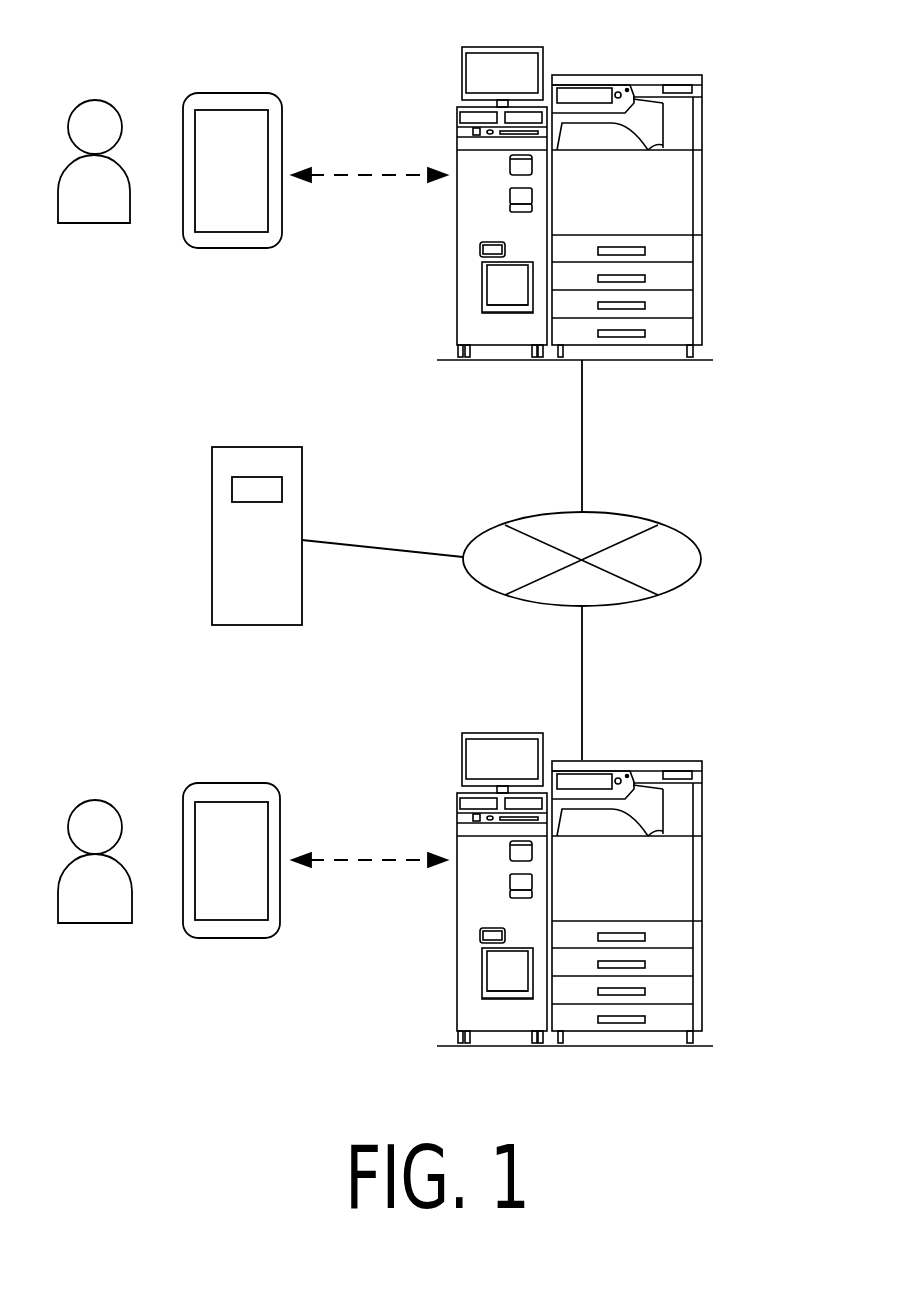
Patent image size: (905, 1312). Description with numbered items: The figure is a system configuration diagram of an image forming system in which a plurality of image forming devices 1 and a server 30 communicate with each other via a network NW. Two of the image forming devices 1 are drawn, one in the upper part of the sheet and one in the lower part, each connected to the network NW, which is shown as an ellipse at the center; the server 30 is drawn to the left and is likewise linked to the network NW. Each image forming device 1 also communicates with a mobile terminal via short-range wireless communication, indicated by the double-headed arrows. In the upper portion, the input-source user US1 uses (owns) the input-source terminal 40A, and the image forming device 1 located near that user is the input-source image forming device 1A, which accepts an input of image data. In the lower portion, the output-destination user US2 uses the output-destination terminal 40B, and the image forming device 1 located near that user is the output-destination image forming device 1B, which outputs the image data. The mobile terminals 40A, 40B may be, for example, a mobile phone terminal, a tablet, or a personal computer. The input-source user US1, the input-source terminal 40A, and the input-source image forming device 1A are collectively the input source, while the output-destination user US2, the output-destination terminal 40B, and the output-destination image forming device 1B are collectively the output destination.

The image forming device 1 is at (626, 546).
The input-source image forming device 1A is at (702, 215).
The output-destination image forming device 1B is at (702, 900).
The server 30 is at (212, 513).
The input-source terminal 40A is at (237, 92).
The output-destination terminal 40B is at (235, 940).
The network NW is at (687, 533).
The input-source user US1 is at (92, 225).
The output-destination user US2 is at (92, 927).